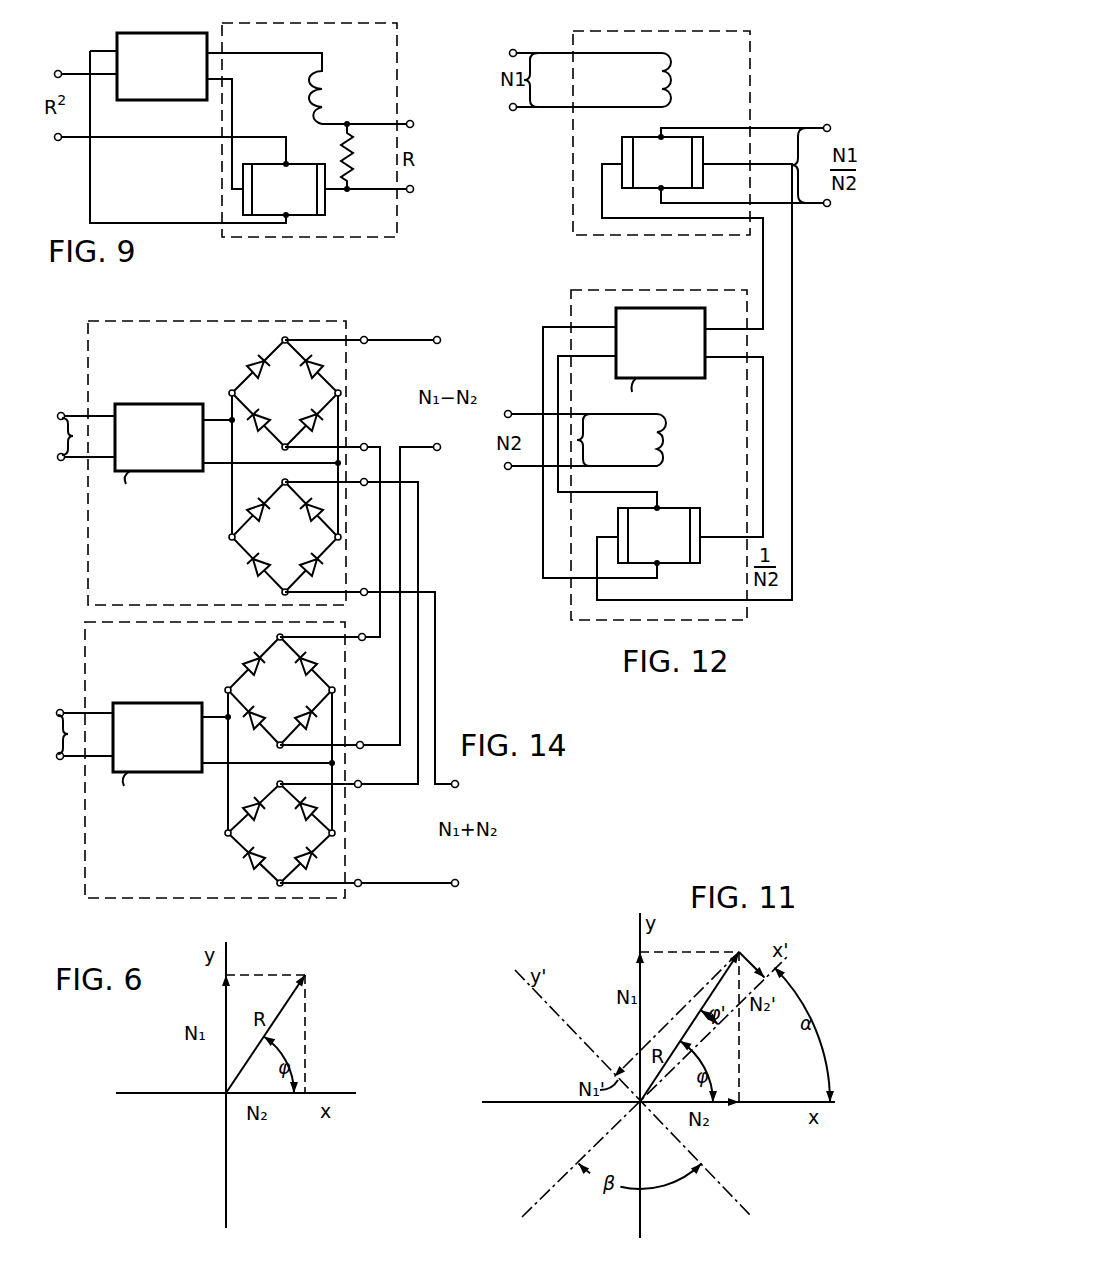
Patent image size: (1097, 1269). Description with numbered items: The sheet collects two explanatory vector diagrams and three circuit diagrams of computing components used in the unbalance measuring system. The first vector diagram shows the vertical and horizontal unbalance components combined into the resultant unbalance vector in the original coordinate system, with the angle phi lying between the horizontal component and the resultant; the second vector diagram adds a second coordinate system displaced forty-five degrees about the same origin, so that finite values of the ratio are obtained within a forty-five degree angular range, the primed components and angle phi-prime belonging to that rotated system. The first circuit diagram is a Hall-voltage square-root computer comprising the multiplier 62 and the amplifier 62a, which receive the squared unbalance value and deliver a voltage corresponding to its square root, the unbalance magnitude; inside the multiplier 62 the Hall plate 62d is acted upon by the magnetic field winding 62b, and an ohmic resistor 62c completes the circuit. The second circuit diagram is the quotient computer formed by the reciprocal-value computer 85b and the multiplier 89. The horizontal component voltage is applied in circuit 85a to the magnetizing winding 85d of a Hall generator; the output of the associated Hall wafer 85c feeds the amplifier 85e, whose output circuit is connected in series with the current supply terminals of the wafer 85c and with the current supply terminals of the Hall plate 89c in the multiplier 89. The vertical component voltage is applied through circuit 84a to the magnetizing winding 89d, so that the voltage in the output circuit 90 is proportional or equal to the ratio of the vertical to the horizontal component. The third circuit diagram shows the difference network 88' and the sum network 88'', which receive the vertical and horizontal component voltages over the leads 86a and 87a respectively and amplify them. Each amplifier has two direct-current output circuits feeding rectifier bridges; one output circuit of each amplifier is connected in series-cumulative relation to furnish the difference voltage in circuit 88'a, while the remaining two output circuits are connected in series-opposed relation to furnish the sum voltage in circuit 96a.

In FIG. 9, the multiplier 62 is at (395, 48).
In FIG. 9, the amplifier 62a is at (156, 45).
In FIG. 9, the magnetic field winding 62b is at (308, 92).
In FIG. 9, the ohmic resistor 62c is at (348, 148).
In FIG. 9, the Hall plate 62d is at (305, 212).
In FIG. 12, the input circuit for voltage N1 84a is at (549, 80).
In FIG. 12, the multiplier 89 is at (750, 80).
In FIG. 12, the Hall plate 89c is at (632, 154).
In FIG. 12, the magnetizing winding 89d is at (670, 84).
In FIG. 12, the output circuit 90 is at (746, 166).
In FIG. 12, the input circuit 85a is at (600, 440).
In FIG. 12, the reciprocal-value computer 85b is at (670, 290).
In FIG. 12, the Hall wafer 85c is at (678, 508).
In FIG. 12, the magnetizing winding 85d is at (664, 460).
In FIG. 12, the amplifier 85e is at (695, 378).
In FIG. 14, the difference network 88' is at (217, 448).
In FIG. 14, the sum network 88'' is at (191, 760).
In FIG. 14, the leads 86a is at (74, 437).
In FIG. 14, the leads 87a is at (67, 735).
In FIG. 14, the difference voltage circuit 88'a is at (363, 541).
In FIG. 14, the sum voltage leads 96a is at (430, 790).